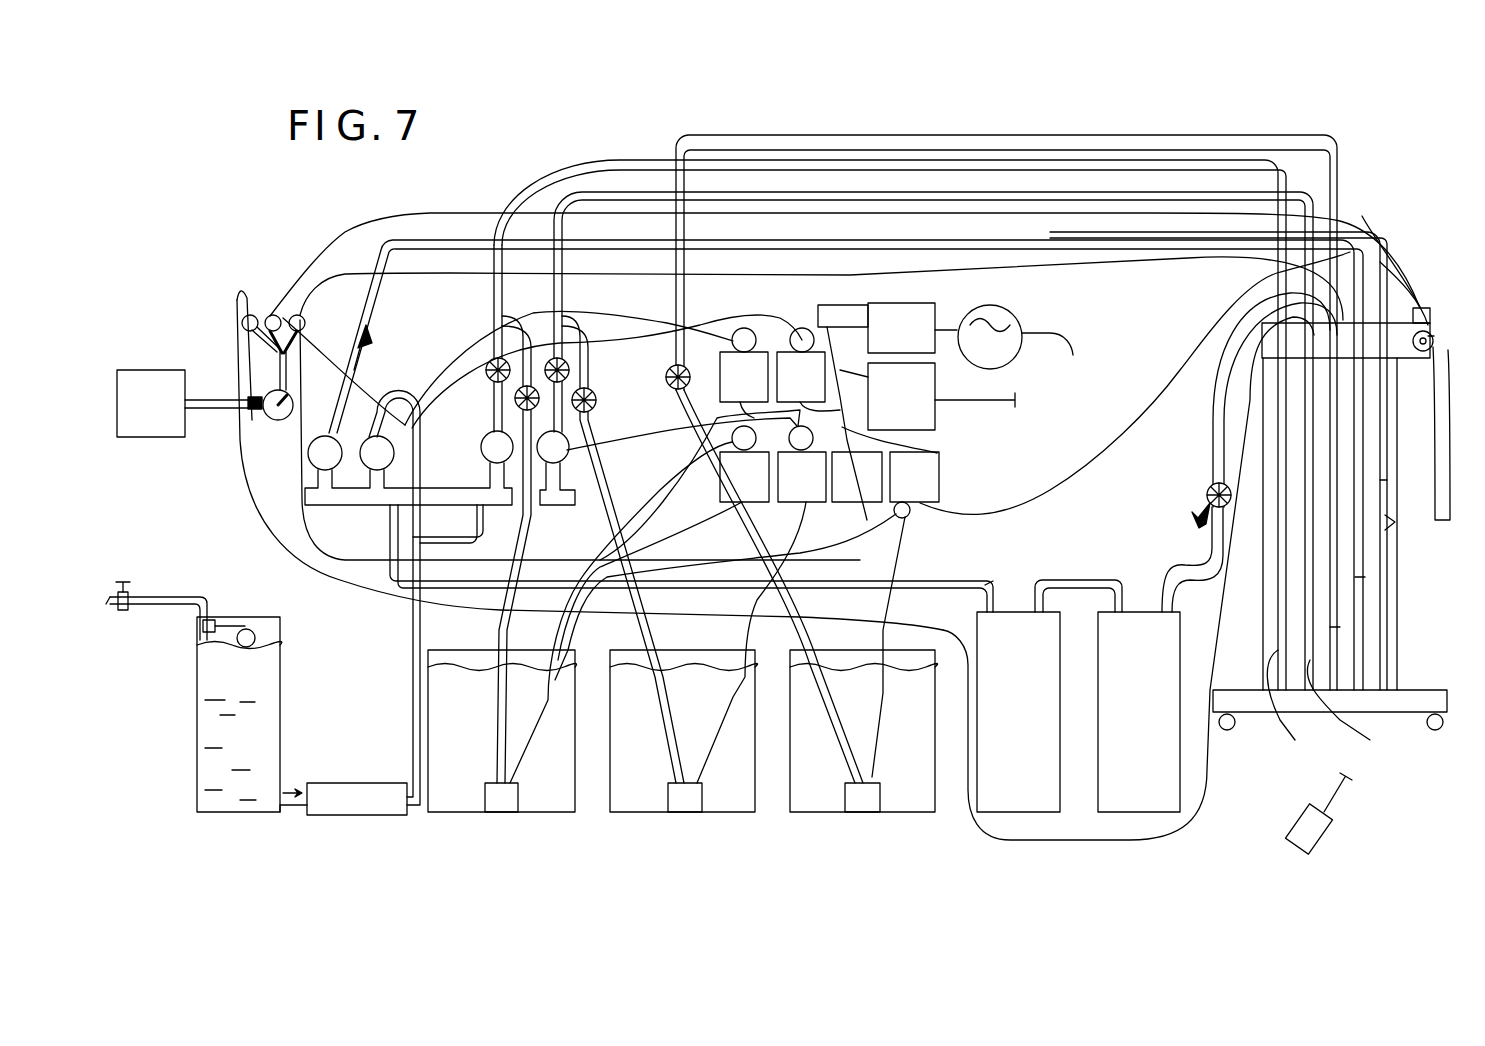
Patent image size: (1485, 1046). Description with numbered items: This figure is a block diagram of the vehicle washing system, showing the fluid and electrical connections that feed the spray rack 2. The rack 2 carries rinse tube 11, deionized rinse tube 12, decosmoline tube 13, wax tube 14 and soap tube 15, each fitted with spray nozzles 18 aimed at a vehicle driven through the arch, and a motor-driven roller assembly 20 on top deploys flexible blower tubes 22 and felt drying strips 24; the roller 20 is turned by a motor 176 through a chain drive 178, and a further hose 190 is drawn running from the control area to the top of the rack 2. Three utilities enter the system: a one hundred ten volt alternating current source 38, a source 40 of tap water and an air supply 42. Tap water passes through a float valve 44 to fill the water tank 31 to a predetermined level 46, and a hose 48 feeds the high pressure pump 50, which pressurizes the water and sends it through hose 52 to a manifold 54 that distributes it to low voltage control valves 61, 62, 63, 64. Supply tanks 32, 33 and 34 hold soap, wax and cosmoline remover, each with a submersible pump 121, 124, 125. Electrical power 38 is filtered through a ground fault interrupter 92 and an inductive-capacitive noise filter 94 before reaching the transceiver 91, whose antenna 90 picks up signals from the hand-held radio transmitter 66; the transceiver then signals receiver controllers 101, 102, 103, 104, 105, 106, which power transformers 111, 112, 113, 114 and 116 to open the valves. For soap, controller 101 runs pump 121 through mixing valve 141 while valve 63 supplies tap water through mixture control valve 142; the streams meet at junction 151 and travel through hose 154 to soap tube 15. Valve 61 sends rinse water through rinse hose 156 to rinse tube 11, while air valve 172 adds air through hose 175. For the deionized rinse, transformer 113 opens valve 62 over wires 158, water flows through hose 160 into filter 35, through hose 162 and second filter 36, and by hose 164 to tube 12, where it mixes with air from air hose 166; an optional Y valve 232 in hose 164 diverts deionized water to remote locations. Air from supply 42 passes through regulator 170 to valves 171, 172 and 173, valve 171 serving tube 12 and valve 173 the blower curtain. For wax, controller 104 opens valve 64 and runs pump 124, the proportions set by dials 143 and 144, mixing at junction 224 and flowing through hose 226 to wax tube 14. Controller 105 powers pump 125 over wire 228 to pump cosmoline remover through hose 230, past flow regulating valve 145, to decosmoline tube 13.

The spray rack 2 is at (1413, 690).
The rinse tube 11 is at (1390, 485).
The deionized rinse tube 12 is at (1360, 577).
The decosmoline tube 13 is at (1335, 627).
The wax tube 14 is at (1352, 709).
The soap tube 15 is at (1299, 704).
The spray nozzles 18 is at (1258, 720).
The roller assembly 20 is at (1436, 333).
The blower tubes 22 is at (1432, 405).
The felt drying strips 24 is at (1442, 460).
The water tank 31 is at (225, 790).
The supply tank 32 is at (465, 795).
The supply tank 33 is at (645, 795).
The supply tank 34 is at (830, 795).
The filter 35 is at (1018, 712).
The second filter 36 is at (1139, 712).
The 110-volt alternating current source 38 is at (1024, 344).
The source of tap water 40 is at (140, 592).
The air supply 42 is at (152, 370).
The float valve 44 is at (232, 618).
The predetermined level 46 is at (282, 642).
The hose 48 is at (300, 815).
The high pressure pump 50 is at (375, 800).
The hose 52 is at (413, 655).
The manifold 54 is at (455, 500).
The control valve 61 is at (318, 463).
The control valve 62 is at (372, 460).
The control valve 63 is at (500, 450).
The control valve 64 is at (570, 454).
The radio transmitter 66 is at (1330, 832).
The antenna 90 is at (990, 401).
The transceiver 91 is at (901, 396).
The ground fault interrupter 92 is at (908, 318).
The inductive-capacitive noise filter 94 is at (840, 308).
The receiver controller 101 is at (663, 556).
The receiver controller 102 is at (744, 377).
The receiver controller 103 is at (808, 381).
The wax controller 104 is at (761, 617).
The cosmoline receiver controller 105 is at (857, 477).
The receiver controller 106 is at (914, 477).
The low voltage transformer 111 is at (684, 476).
The low voltage transformer 112 is at (731, 343).
The low voltage transformer 113 is at (793, 332).
The transformer 114 is at (797, 424).
The transformer 116 is at (910, 515).
The submersible soap pump 121 is at (513, 802).
The pump 124 is at (697, 800).
The centrifugal pump 125 is at (875, 802).
The mixing valve 141 is at (518, 407).
The mixture control valve 142 is at (492, 382).
The adjusting dial 143 is at (570, 371).
The adjusting dial 144 is at (597, 404).
The flow regulating valve 145 is at (665, 380).
The junction 151 is at (492, 345).
The hose 154 is at (570, 177).
The rinse hose 156 is at (375, 330).
The wires 158 is at (712, 320).
The hose 160 is at (990, 582).
The hose 162 is at (1093, 580).
The hose 164 is at (1211, 445).
The air hose 166 is at (322, 268).
The regulator 170 is at (280, 420).
The air valve 171 is at (263, 305).
The air valve 172 is at (293, 300).
The air valve 173 is at (341, 348).
The hose 175 is at (235, 334).
The motor 176 is at (1375, 232).
The chain drive 178 is at (1430, 320).
The hose 190 is at (468, 209).
The junction 224 is at (578, 318).
The hose 226 is at (567, 272).
The wire 228 is at (880, 594).
The hose 230 is at (848, 133).
The Y valve 232 is at (1207, 492).